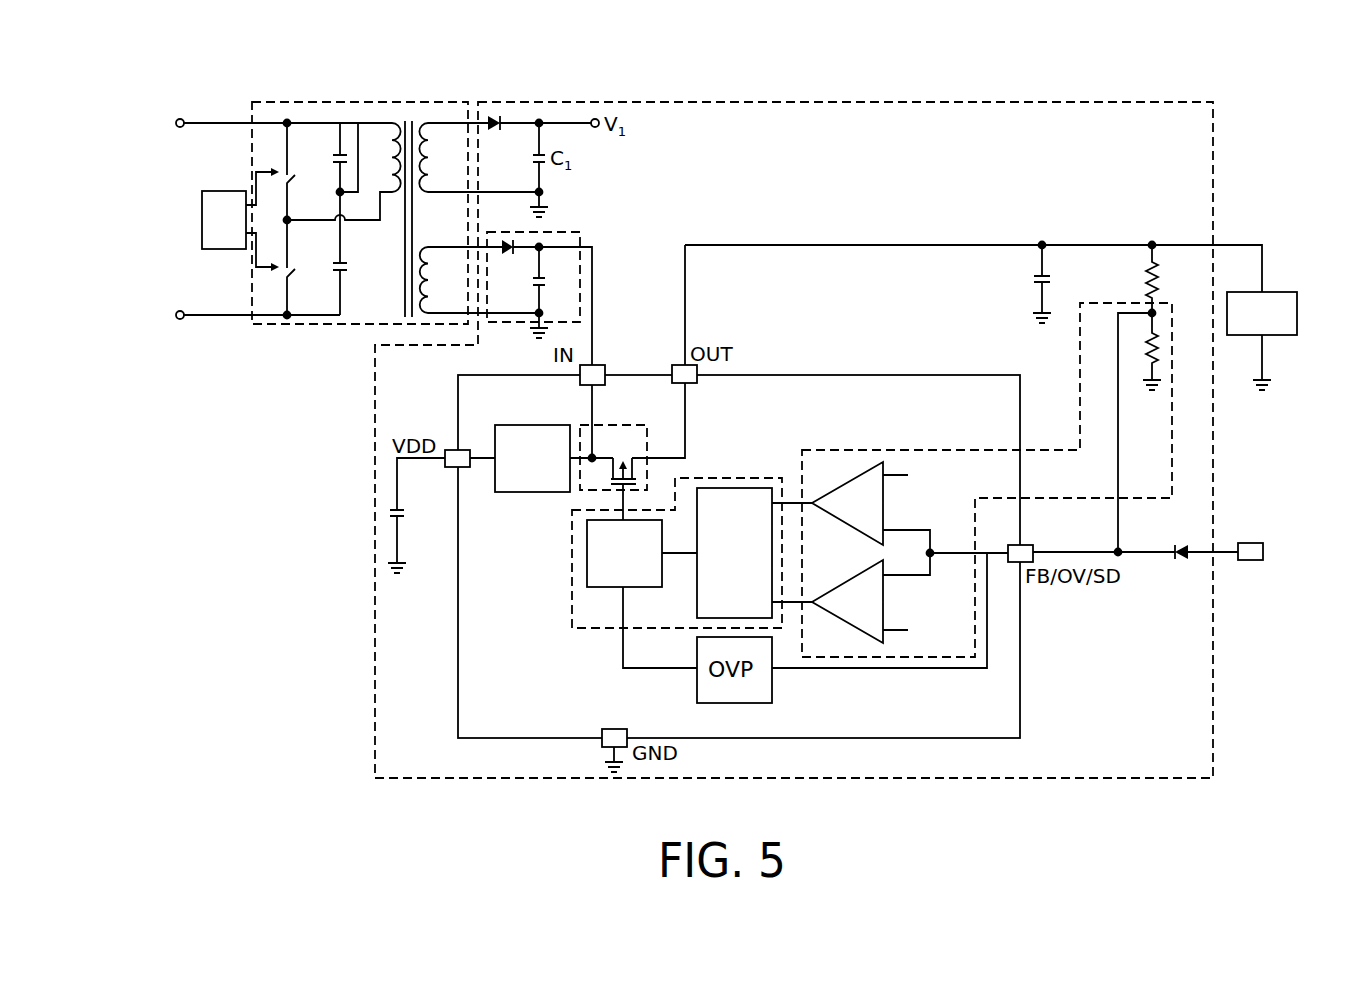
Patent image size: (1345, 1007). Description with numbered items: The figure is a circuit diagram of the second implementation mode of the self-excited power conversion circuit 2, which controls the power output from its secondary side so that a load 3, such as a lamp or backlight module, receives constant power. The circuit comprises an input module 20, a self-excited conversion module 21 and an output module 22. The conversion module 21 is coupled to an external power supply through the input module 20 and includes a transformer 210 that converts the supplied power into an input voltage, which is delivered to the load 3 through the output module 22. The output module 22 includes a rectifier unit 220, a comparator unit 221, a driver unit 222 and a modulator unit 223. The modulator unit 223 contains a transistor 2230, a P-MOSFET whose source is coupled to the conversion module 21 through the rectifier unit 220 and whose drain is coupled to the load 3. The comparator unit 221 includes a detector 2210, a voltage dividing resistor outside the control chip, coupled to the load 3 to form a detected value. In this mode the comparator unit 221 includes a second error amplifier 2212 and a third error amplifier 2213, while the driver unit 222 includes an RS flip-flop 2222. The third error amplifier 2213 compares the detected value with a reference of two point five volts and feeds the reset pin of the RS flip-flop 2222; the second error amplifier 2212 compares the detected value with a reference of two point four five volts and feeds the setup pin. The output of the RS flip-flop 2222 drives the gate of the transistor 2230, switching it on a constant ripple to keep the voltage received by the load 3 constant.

The self-excited power conversion circuit 2 is at (170, 100).
The input module 20 is at (222, 191).
The self-excited conversion module 21 is at (392, 102).
The output module 22 is at (517, 102).
The transformer 210 is at (393, 206).
The rectifier unit 220 is at (580, 273).
The transistor 2230 is at (642, 462).
The driver unit 222 is at (757, 478).
The third error amplifier 2213 is at (853, 478).
The comparator unit 221 is at (957, 450).
The detector 2210 is at (1155, 333).
The load 3 is at (1278, 292).
The modulator unit 223 is at (590, 425).
The RS flip-flop 2222 is at (772, 616).
The second error amplifier 2212 is at (860, 645).